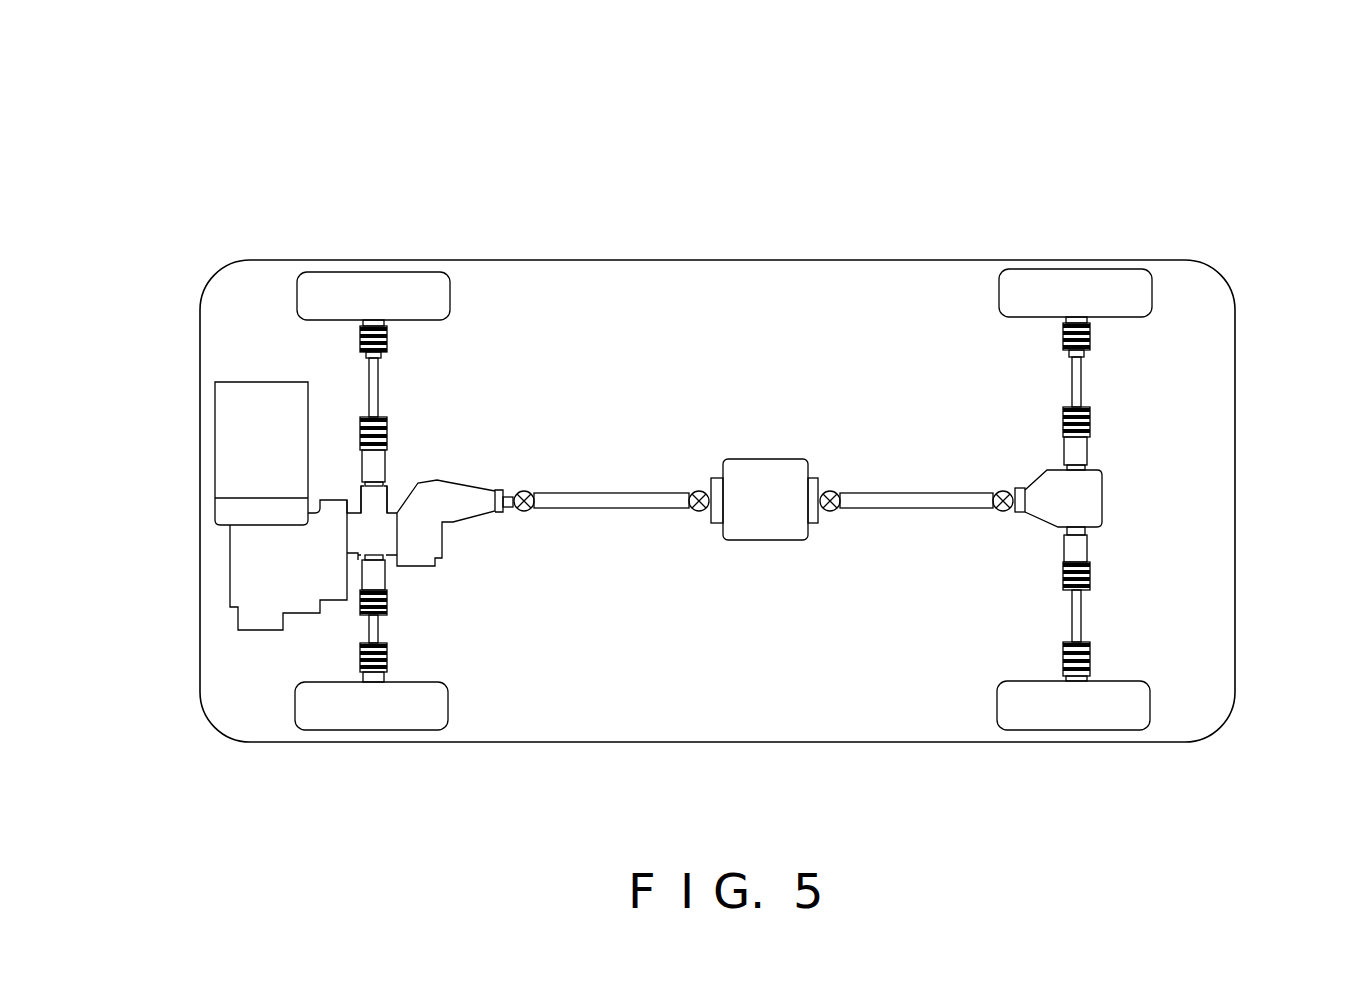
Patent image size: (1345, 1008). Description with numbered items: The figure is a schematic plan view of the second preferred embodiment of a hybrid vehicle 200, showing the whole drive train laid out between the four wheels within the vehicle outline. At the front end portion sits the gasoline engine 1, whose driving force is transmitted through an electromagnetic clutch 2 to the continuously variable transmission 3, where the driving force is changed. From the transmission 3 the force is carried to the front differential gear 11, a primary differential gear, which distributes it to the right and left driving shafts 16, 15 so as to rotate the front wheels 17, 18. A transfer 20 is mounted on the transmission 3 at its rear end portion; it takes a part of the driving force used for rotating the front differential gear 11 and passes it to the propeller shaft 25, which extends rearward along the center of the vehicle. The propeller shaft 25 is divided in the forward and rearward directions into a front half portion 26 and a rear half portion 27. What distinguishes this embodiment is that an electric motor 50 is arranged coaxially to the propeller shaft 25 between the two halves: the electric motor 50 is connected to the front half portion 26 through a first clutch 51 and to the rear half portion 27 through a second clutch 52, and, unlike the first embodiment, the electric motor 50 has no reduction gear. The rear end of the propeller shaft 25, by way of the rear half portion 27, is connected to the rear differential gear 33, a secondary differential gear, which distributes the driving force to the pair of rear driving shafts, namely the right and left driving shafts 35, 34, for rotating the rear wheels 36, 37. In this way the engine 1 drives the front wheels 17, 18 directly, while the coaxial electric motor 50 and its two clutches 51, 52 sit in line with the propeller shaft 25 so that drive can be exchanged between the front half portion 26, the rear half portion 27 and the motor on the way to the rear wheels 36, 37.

The hybrid vehicle 200 is at (1258, 182).
The gasoline engine 1 is at (230, 443).
The electromagnetic clutch 2 is at (232, 514).
The transmission 3 is at (245, 580).
The front differential gear 11 is at (373, 512).
The left driving shaft 15 is at (377, 629).
The right driving shaft 16 is at (375, 377).
The front wheel 17 is at (366, 710).
The front wheel 18 is at (363, 282).
The transfer 20 is at (452, 476).
The propeller shaft 25 is at (611, 493).
The front half portion 26 is at (635, 505).
The rear half portion 27 is at (915, 500).
The rear differential gear 33 is at (1087, 500).
The left driving shaft 34 is at (1078, 615).
The right driving shaft 35 is at (1078, 380).
The rear wheel 36 is at (1073, 710).
The rear wheel 37 is at (1056, 285).
The electric motor 50 is at (765, 523).
The first clutch 51 is at (712, 478).
The second clutch 52 is at (818, 478).